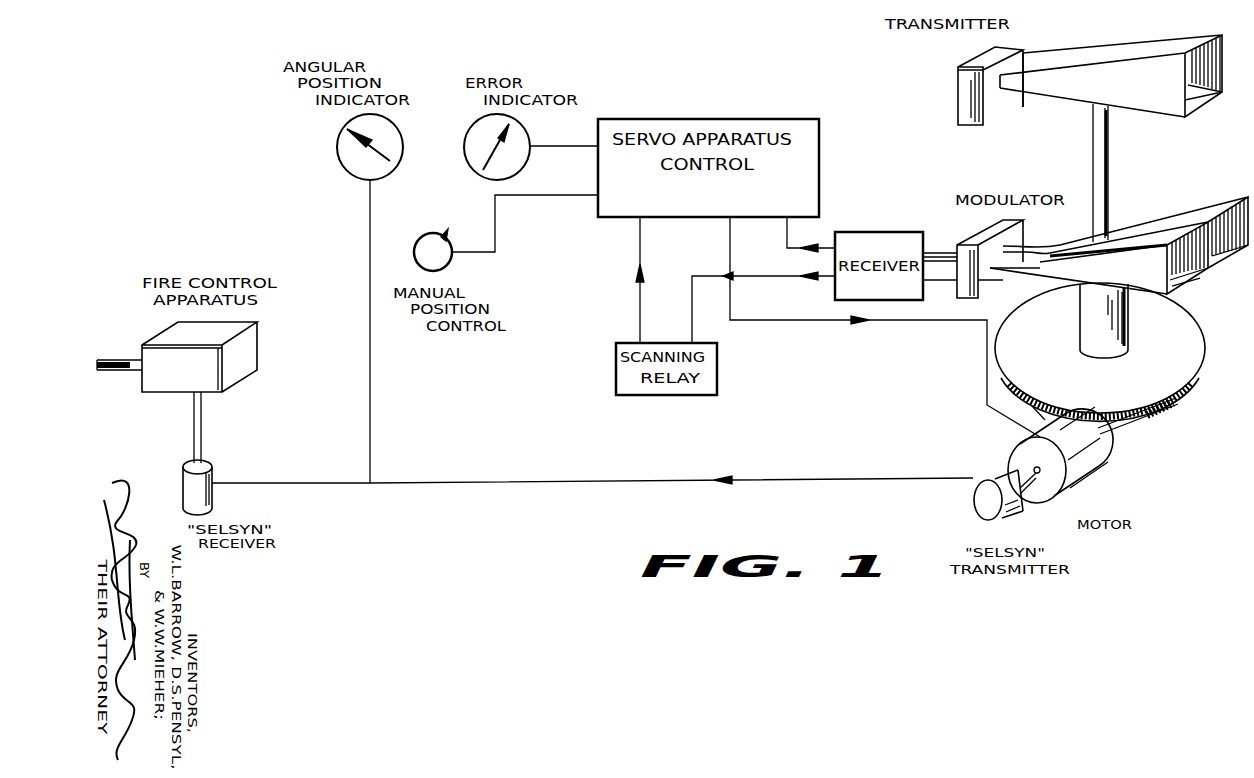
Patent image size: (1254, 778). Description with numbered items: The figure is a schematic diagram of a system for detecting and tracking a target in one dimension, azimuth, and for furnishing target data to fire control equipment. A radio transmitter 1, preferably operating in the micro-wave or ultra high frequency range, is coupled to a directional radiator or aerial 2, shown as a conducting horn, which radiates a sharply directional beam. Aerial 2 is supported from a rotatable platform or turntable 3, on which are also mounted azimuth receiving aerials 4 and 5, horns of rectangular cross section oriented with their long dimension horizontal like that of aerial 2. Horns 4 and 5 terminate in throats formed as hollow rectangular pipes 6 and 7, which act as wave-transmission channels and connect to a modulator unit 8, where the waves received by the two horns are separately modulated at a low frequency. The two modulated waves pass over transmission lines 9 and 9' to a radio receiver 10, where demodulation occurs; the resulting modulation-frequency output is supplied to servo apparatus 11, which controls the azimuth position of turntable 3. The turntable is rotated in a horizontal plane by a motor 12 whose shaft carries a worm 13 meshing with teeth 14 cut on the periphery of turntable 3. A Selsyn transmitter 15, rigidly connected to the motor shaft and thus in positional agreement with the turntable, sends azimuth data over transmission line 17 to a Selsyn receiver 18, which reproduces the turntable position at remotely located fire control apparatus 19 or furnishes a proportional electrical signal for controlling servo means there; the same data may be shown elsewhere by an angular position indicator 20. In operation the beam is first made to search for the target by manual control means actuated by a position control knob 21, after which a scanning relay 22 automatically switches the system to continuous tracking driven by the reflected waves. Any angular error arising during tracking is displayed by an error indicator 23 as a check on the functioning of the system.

The radio transmitter 1 is at (1023, 58).
The directional radiator or aerial 2 is at (1075, 65).
The rotatable platform or turntable 3 is at (1194, 333).
The azimuth receiving aerial 4 is at (1184, 222).
The azimuth receiving aerial 5 is at (1136, 243).
The hollow rectangular pipe 6 is at (1028, 252).
The hollow rectangular pipe 7 is at (1003, 281).
The modulator unit 8 is at (1020, 233).
The transmission line 9 is at (940, 236).
The transmission line 9' is at (940, 290).
The radio receiver 10 is at (868, 233).
The servo apparatus 11 is at (722, 121).
The motor 12 is at (1083, 490).
The worm 13 is at (1168, 406).
The teeth 14 is at (1032, 406).
The Selsyn transmitter 15 is at (1012, 510).
The transmission line 17 is at (490, 485).
The Selsyn receiver 18 is at (214, 497).
The fire control apparatus 19 is at (244, 376).
The angular position indicator 20 is at (340, 140).
The position control knob 21 is at (447, 265).
The scanning relay 22 is at (717, 378).
The error indicator 23 is at (466, 140).